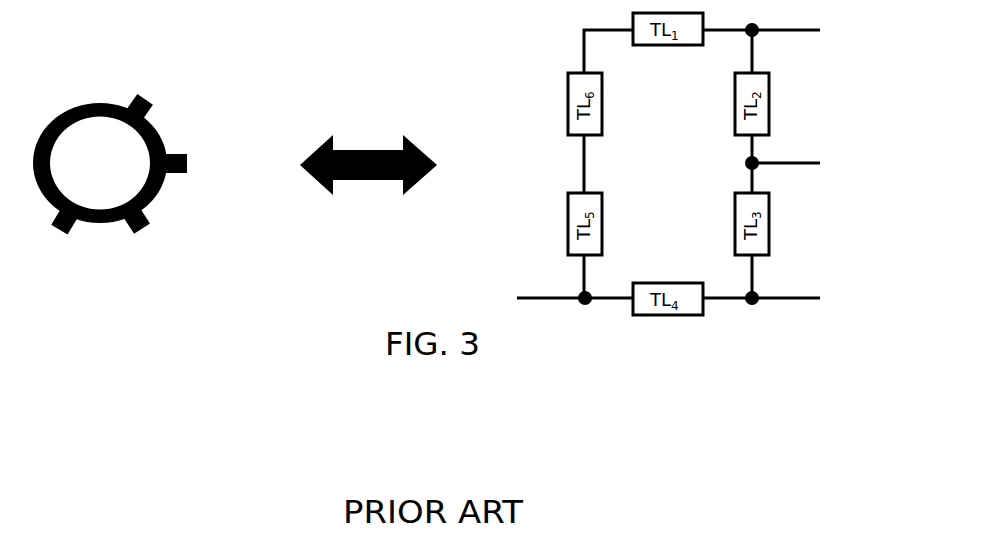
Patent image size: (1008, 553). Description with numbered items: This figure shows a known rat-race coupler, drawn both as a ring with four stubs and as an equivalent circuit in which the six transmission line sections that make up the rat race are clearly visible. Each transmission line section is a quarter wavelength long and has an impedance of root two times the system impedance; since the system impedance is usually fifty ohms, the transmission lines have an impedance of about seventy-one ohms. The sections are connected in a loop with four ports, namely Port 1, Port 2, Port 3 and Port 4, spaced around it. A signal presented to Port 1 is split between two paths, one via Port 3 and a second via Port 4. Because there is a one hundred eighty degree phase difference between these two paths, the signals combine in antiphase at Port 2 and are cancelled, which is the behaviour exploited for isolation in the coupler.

The Port 1 is at (511, 72).
The Port 2 is at (510, 256).
The Port 3 is at (526, 164).
The Port 4 is at (307, 256).